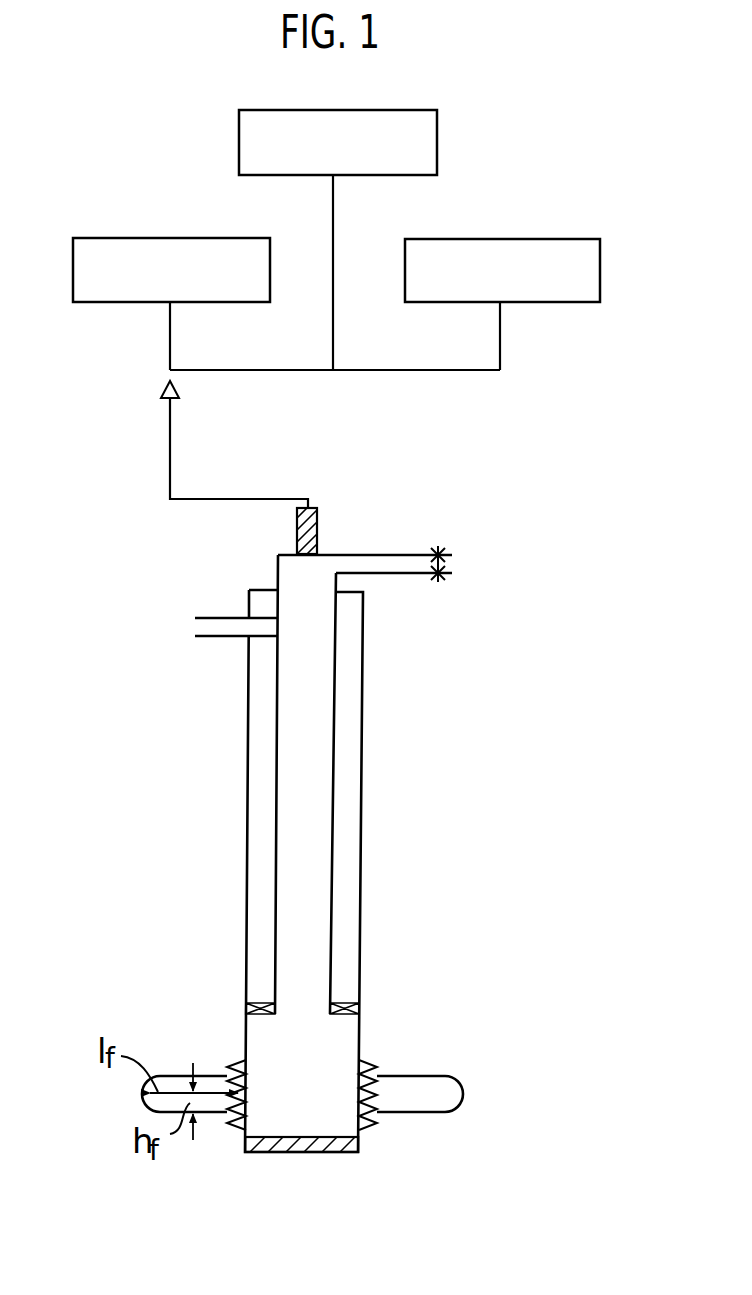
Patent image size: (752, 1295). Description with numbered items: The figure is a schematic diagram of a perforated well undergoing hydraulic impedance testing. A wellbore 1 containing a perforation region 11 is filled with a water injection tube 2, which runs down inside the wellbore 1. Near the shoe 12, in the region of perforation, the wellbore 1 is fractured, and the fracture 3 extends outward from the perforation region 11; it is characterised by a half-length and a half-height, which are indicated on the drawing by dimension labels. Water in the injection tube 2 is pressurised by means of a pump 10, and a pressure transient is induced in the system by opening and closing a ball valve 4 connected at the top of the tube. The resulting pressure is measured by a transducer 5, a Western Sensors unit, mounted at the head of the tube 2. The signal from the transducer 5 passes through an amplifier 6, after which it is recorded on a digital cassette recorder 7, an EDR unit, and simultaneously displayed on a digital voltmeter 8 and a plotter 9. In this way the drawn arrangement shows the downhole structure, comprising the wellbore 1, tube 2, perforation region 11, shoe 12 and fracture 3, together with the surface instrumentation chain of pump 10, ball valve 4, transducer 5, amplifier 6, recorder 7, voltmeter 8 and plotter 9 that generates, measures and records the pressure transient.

The wellbore 1 is at (360, 889).
The water injection tube 2 is at (315, 862).
The fracture 3 is at (450, 1078).
The ball valve 4 is at (440, 562).
The transducer 5 is at (312, 531).
The amplifier 6 is at (159, 390).
The digital cassette recorder 7 is at (562, 247).
The digital voltmeter 8 is at (115, 245).
The plotter 9 is at (418, 120).
The pump 10 is at (190, 627).
The perforation region 11 is at (373, 1121).
The shoe 12 is at (300, 1150).